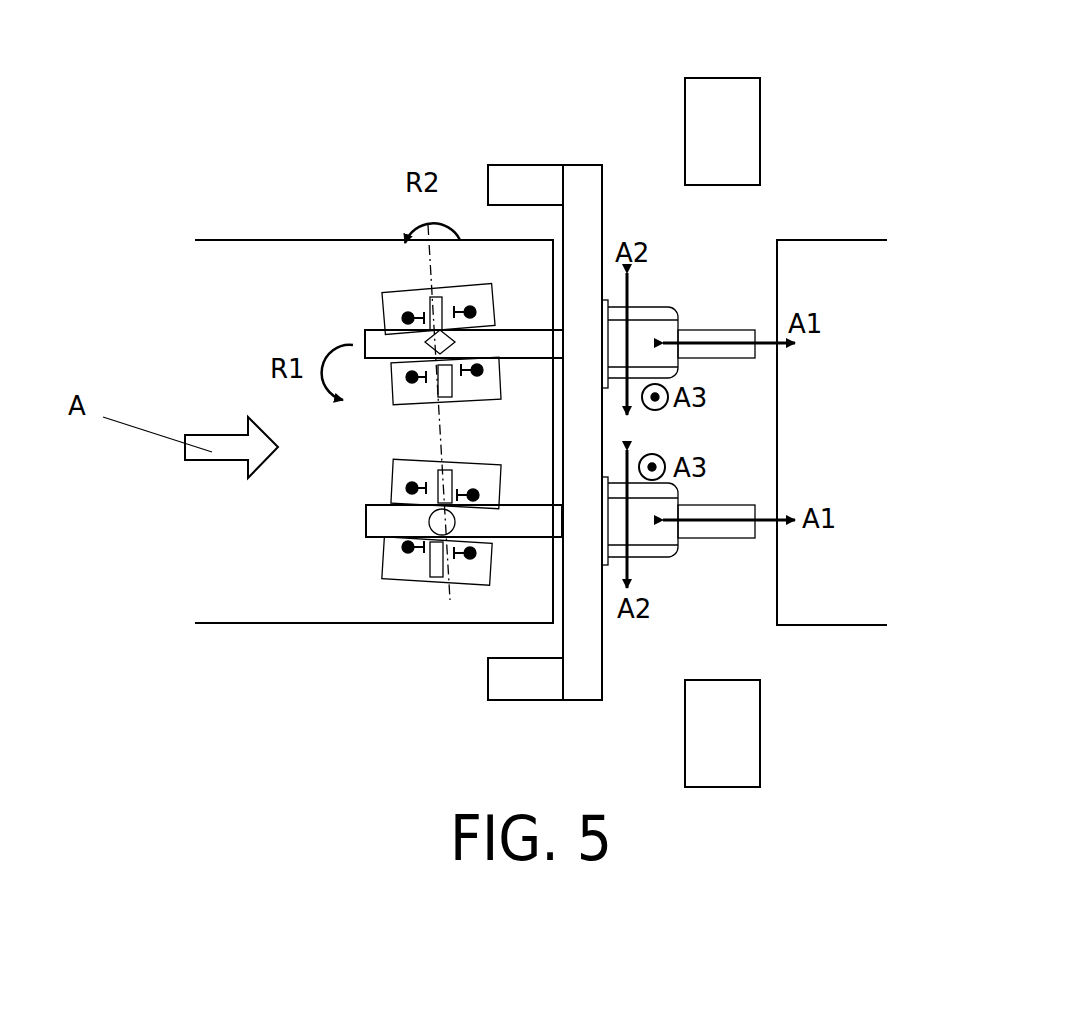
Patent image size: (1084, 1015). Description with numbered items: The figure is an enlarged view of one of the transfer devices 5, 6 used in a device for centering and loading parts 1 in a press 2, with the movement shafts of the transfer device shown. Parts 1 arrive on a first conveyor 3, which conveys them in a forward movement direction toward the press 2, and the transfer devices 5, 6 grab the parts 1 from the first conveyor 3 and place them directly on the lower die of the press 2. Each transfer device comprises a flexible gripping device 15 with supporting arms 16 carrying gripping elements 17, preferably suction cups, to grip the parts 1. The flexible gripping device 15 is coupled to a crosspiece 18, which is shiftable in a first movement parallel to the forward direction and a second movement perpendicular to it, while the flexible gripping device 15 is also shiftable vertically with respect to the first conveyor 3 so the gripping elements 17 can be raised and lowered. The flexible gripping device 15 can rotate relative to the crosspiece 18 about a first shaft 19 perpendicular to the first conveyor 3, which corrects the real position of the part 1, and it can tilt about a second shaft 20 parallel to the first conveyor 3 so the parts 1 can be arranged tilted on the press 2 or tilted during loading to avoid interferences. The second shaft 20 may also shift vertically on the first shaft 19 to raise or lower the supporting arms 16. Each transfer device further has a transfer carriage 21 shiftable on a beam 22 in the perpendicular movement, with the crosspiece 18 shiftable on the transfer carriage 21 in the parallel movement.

The parts 1 is at (382, 548).
The press 2 is at (820, 275).
The first conveyor 3 is at (245, 540).
The transfer device 5 is at (420, 345).
The transfer device 6 is at (675, 550).
The flexible gripping device 15 is at (430, 302).
The supporting arms 16 is at (413, 555).
The gripping elements 17 is at (468, 553).
The crosspiece 18 is at (730, 352).
The first shaft 19 is at (447, 340).
The second shaft 20 is at (436, 300).
The transfer carriage 21 is at (668, 310).
The beam 22 is at (580, 227).